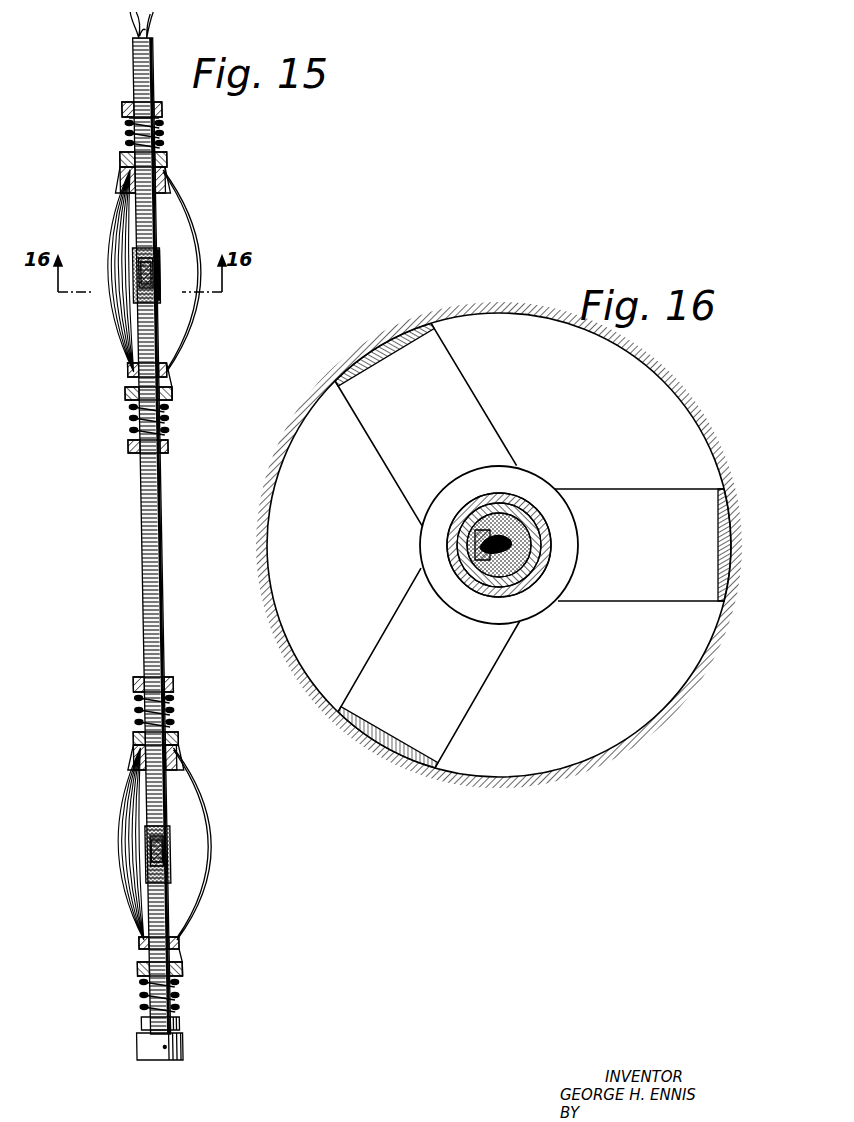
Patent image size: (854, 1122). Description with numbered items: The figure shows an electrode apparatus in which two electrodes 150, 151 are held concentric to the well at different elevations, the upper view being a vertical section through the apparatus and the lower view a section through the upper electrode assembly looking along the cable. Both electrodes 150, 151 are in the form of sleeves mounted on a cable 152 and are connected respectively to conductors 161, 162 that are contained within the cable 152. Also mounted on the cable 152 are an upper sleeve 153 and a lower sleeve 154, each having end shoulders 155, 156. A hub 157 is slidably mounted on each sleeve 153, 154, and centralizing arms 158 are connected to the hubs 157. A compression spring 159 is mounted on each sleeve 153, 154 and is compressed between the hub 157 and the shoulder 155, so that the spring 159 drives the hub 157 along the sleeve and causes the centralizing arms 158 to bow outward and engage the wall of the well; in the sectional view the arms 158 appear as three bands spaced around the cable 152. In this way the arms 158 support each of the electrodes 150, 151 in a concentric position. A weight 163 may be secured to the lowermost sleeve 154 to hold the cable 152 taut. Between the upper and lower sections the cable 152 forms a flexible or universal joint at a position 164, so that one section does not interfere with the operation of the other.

In FIG. 15, the electrode 150 is at (161, 297).
In FIG. 16, the electrode 150 is at (527, 503).
In FIG. 15, the electrode 151 is at (128, 395).
In FIG. 15, the cable 152 is at (131, 50).
In FIG. 16, the cable 152 is at (513, 575).
In FIG. 15, the upper sleeve 153 is at (164, 172).
In FIG. 15, the lower sleeve 154 is at (169, 410).
In FIG. 15, the end shoulder 155 is at (164, 110).
In FIG. 15, the end shoulder 156 is at (126, 190).
In FIG. 16, the end shoulder 156 is at (430, 546).
In FIG. 15, the hub 157 is at (168, 157).
In FIG. 15, the centralizing arm 158 is at (118, 232).
In FIG. 16, the centralizing arm 158 is at (402, 333).
In FIG. 15, the compression spring 159 is at (126, 125).
In FIG. 15, the conductor 161 is at (140, 268).
In FIG. 16, the conductor 161 is at (500, 548).
In FIG. 15, the conductor 162 is at (140, 300).
In FIG. 16, the conductor 162 is at (517, 583).
In FIG. 15, the weight 163 is at (184, 1048).
In FIG. 15, the position 164 is at (130, 543).